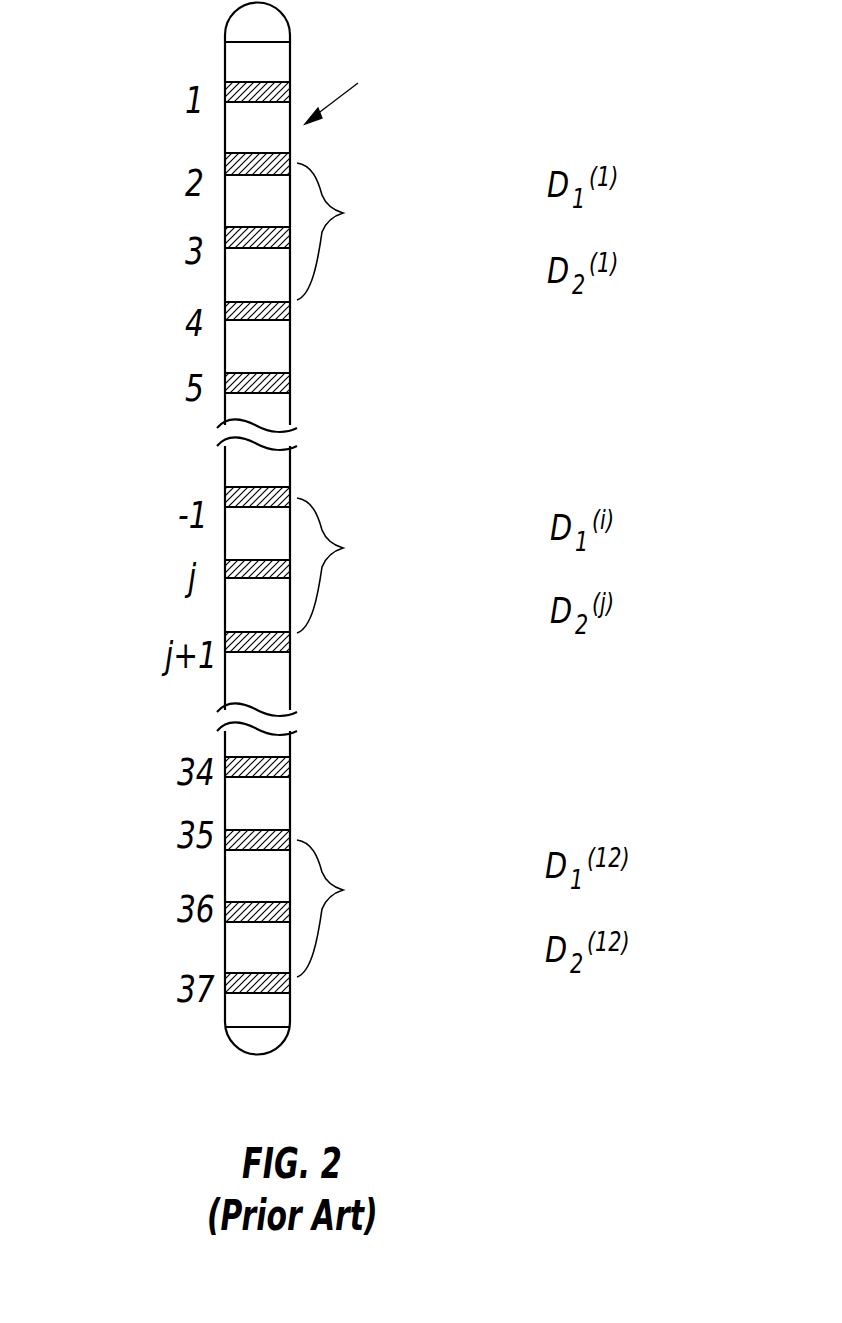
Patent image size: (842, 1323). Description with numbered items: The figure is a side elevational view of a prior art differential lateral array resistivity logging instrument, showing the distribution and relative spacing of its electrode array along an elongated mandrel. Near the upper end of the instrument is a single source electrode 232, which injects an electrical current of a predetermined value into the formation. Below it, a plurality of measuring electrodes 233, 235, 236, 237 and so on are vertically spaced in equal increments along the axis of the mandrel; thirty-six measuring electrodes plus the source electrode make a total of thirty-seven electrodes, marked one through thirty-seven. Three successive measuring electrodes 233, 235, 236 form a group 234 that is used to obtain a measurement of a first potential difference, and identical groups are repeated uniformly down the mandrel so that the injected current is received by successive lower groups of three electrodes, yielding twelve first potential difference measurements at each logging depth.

The source electrode 232 is at (226, 83).
The measuring electrode 233 is at (226, 156).
The group of measuring electrodes 234 is at (429, 887).
The measuring electrode 235 is at (226, 230).
The measuring electrode 236 is at (226, 303).
The measuring electrode 237 is at (226, 373).